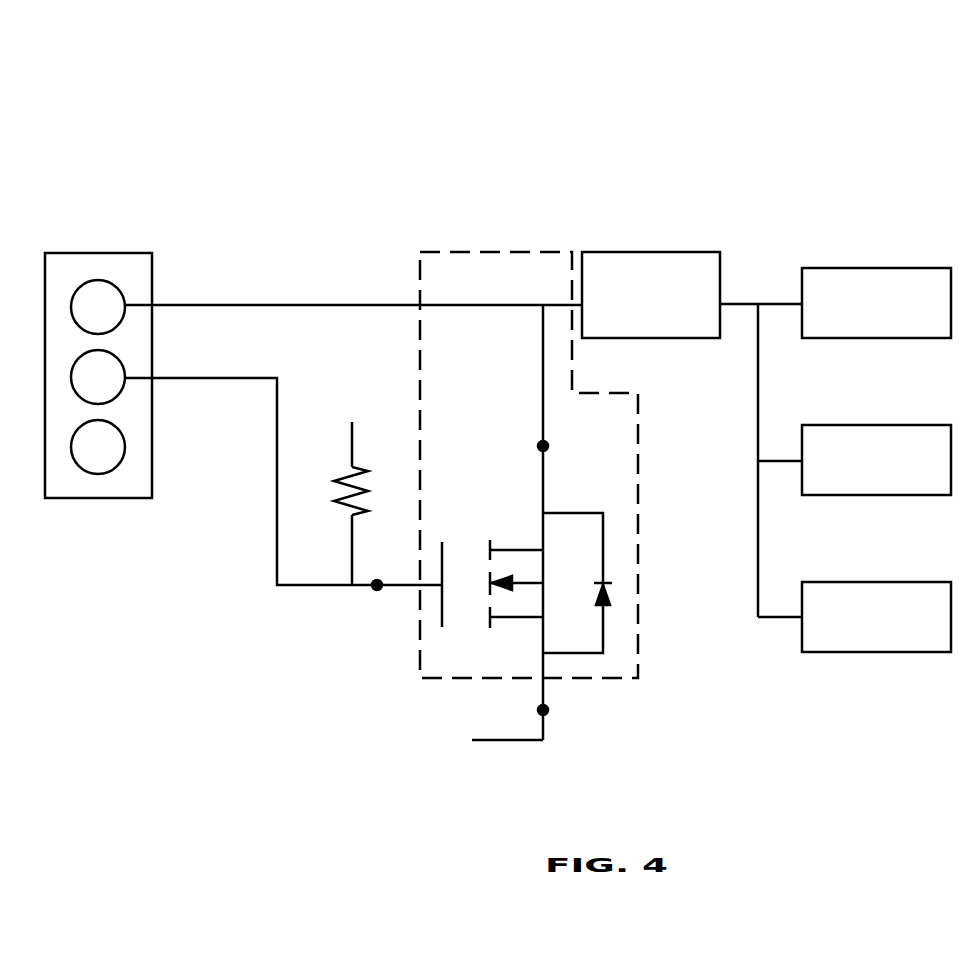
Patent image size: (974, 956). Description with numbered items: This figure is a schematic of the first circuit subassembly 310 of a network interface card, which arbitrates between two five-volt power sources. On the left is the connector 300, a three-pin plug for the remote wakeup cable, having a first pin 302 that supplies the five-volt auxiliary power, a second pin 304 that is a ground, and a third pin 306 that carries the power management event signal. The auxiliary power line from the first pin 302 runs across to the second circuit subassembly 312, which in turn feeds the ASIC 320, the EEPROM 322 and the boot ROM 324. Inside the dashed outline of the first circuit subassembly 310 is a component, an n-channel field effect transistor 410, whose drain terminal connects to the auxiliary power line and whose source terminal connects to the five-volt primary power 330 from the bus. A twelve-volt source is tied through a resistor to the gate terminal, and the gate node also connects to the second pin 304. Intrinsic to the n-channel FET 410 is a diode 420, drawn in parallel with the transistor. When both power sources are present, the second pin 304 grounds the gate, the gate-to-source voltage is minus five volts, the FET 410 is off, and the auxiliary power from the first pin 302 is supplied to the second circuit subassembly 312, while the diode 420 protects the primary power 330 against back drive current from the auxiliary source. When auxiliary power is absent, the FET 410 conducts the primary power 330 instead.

The connector 300 is at (87, 336).
The first pin 302 is at (116, 319).
The second pin 304 is at (116, 389).
The third pin 306 is at (116, 459).
The first circuit subassembly 310 is at (480, 226).
The second circuit subassembly 312 is at (686, 191).
The application specific integrated circuit 320 is at (895, 327).
The electrically erasable programmable ROM 322 is at (895, 484).
The boot ROM 324 is at (895, 641).
The +5V primary power 330 is at (425, 778).
The n-channel field effect transistor 410 is at (427, 622).
The diode 420 is at (626, 620).